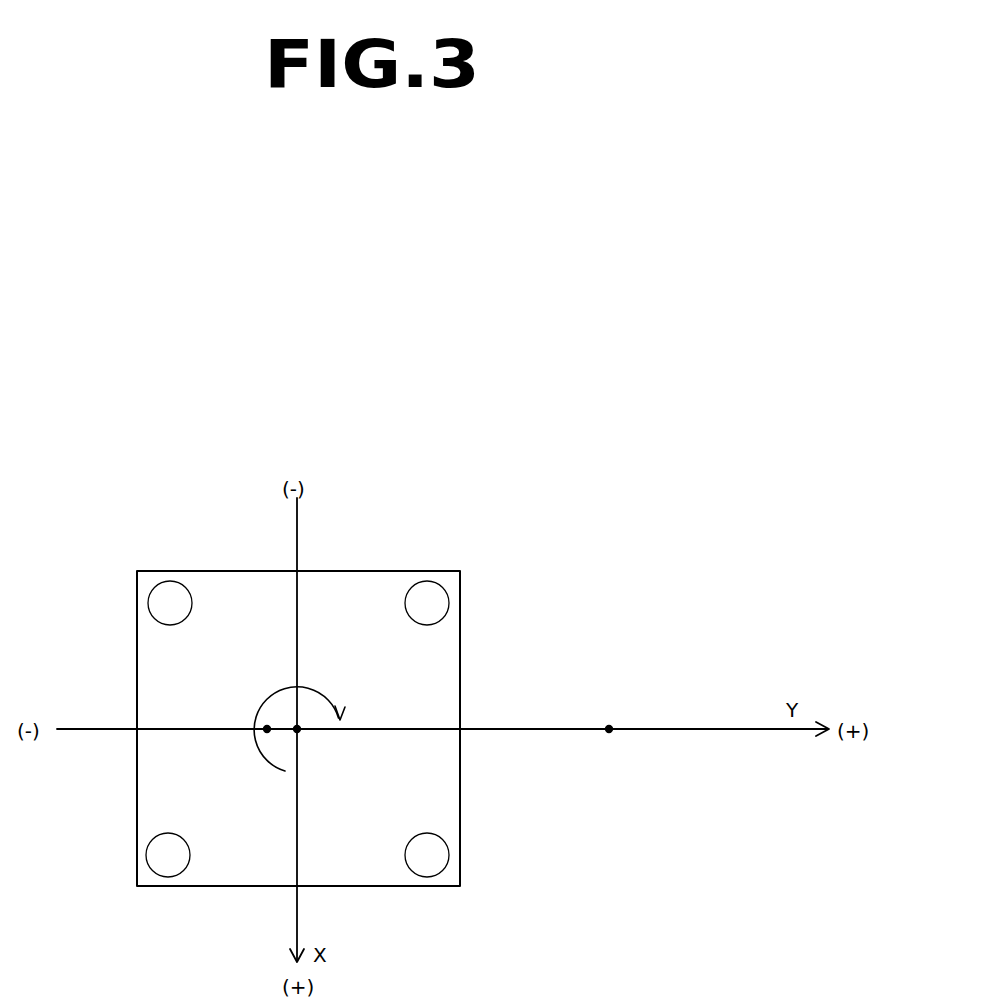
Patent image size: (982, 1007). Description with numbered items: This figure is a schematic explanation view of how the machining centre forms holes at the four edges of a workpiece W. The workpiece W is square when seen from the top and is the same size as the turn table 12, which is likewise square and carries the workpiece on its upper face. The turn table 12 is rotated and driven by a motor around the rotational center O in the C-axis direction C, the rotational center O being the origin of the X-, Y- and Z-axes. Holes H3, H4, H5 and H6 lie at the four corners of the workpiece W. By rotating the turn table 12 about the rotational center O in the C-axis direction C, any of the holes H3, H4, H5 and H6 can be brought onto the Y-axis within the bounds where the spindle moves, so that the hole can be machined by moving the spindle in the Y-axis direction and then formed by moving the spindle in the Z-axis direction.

The turn table 12 is at (460, 808).
The workpiece W is at (375, 580).
The hole H3 is at (440, 603).
The hole H4 is at (157, 603).
The hole H5 is at (156, 856).
The hole H6 is at (440, 854).
The rotational center O is at (299, 731).
The C-axis direction C is at (299, 721).